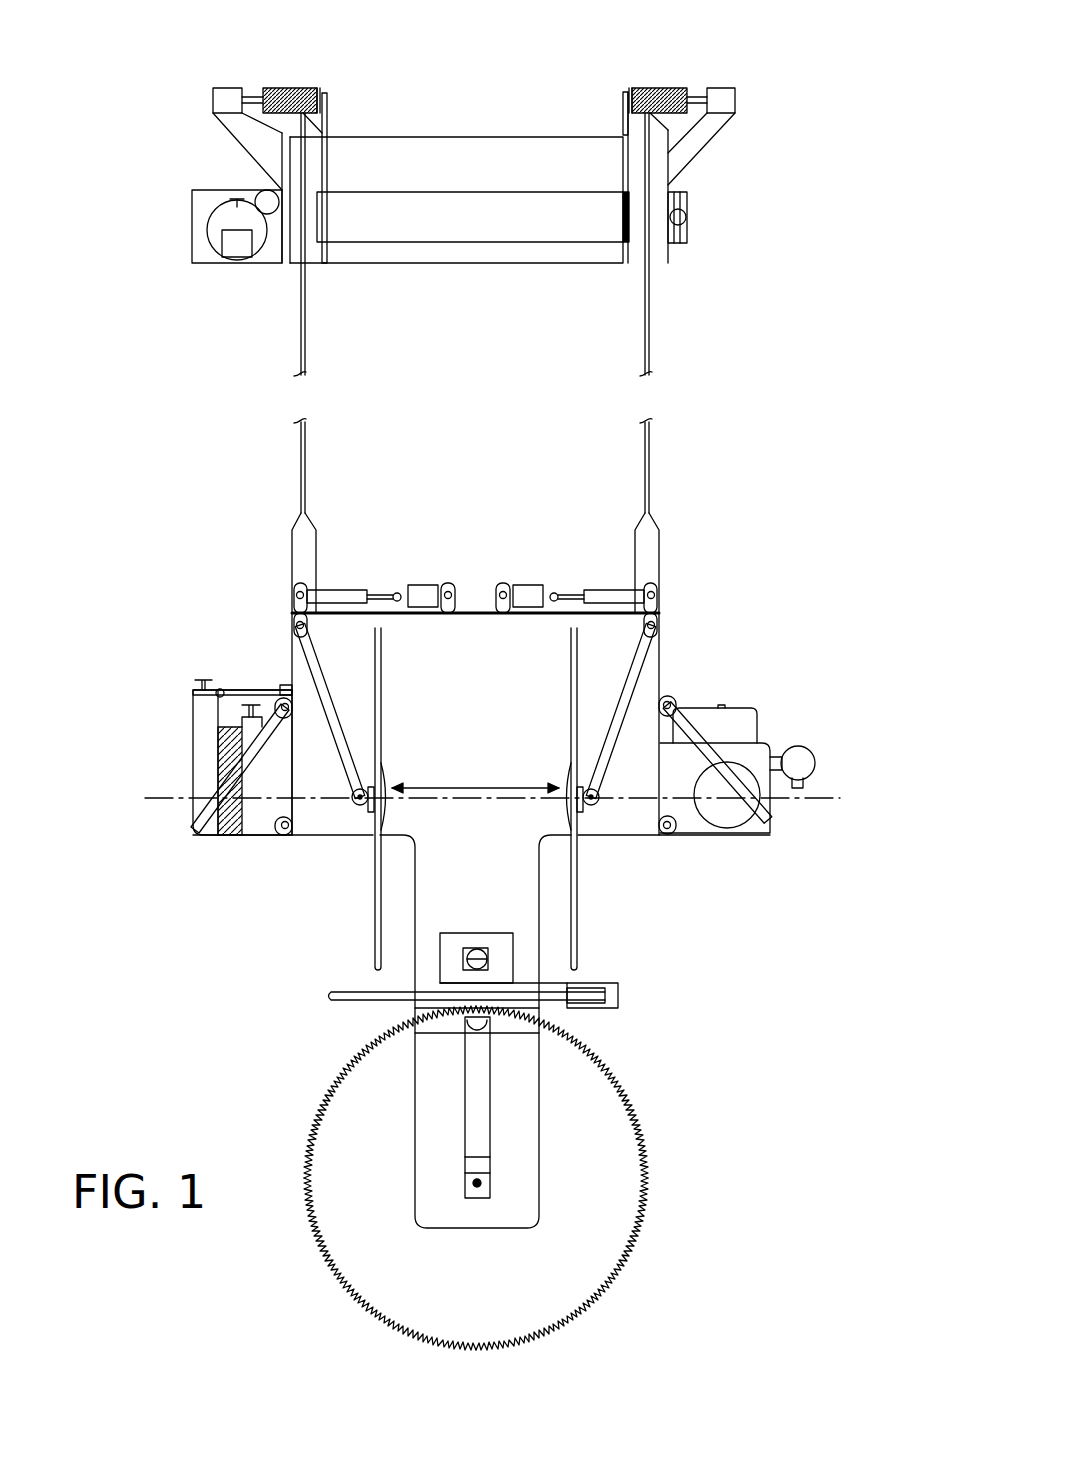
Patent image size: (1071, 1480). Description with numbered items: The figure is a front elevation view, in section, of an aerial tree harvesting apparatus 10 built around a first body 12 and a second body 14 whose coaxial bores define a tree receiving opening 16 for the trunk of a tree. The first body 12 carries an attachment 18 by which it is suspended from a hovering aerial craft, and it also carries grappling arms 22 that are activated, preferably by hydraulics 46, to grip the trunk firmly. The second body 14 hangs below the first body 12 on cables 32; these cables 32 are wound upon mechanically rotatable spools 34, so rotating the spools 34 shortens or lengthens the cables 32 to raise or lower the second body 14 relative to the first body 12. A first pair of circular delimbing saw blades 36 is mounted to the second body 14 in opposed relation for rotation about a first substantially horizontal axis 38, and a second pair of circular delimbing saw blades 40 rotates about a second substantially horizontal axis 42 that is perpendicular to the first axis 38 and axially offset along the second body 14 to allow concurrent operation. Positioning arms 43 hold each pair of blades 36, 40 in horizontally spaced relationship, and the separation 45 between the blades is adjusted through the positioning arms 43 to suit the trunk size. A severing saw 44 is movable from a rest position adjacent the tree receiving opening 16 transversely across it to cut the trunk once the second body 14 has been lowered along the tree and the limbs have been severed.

The aerial tree harvesting apparatus 10 is at (177, 138).
The first body 12 is at (740, 197).
The second body 14 is at (826, 741).
The tree receiving opening 16 is at (466, 740).
The attachment 18 is at (205, 218).
The grappling arms 22 is at (468, 218).
The cables 32 is at (302, 478).
The mechanically rotatable spools 34 is at (300, 88).
The first pair of circular delimbing saw blades 36 is at (373, 915).
The first substantially horizontal axis 38 is at (160, 797).
The second pair of circular delimbing saw blades 40 is at (623, 1157).
The second substantially horizontal axis 42 is at (477, 1183).
The positioning arms 43 is at (484, 1097).
The severing saw 44 is at (352, 992).
The separation 45 is at (462, 790).
The hydraulics 46 is at (668, 213).